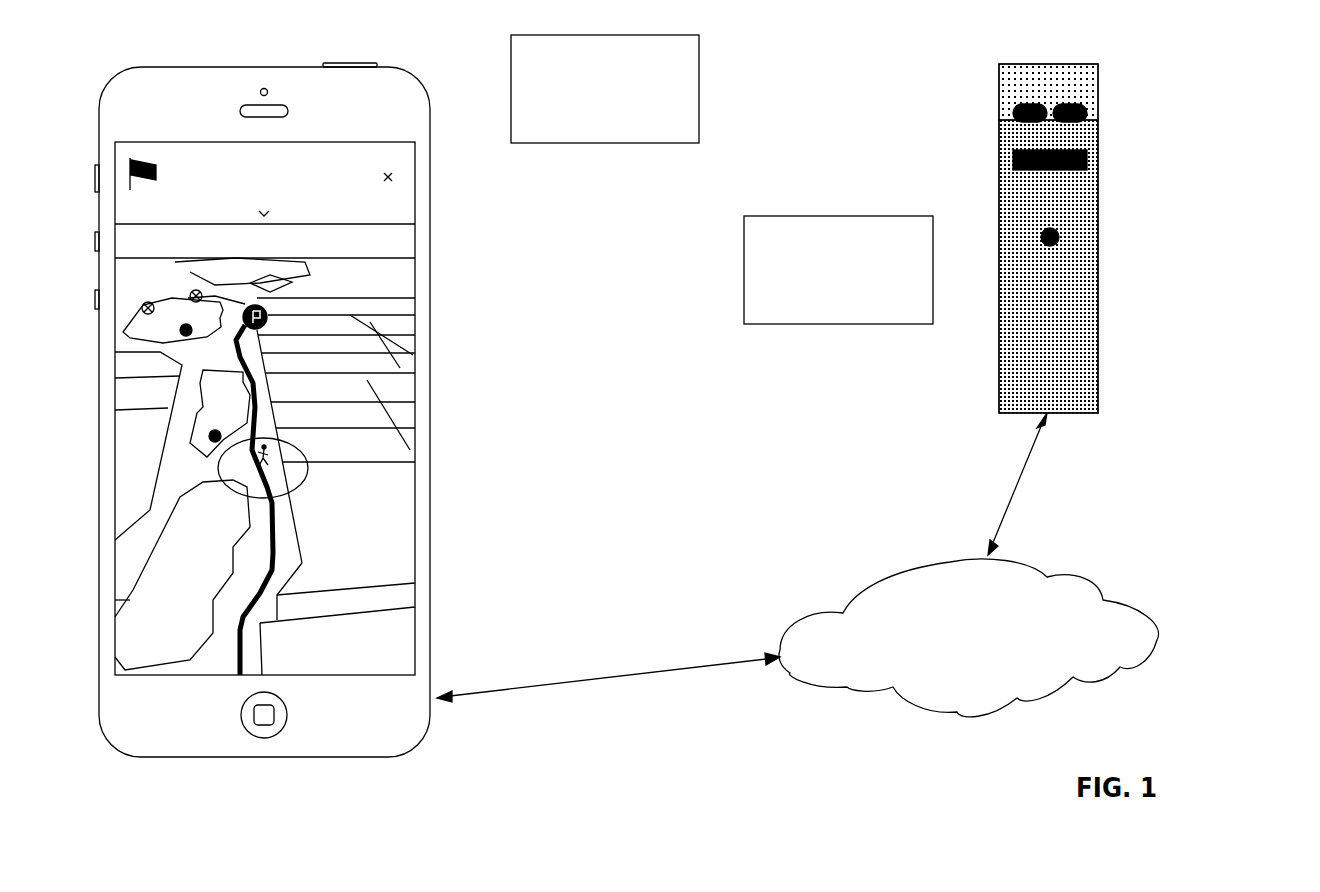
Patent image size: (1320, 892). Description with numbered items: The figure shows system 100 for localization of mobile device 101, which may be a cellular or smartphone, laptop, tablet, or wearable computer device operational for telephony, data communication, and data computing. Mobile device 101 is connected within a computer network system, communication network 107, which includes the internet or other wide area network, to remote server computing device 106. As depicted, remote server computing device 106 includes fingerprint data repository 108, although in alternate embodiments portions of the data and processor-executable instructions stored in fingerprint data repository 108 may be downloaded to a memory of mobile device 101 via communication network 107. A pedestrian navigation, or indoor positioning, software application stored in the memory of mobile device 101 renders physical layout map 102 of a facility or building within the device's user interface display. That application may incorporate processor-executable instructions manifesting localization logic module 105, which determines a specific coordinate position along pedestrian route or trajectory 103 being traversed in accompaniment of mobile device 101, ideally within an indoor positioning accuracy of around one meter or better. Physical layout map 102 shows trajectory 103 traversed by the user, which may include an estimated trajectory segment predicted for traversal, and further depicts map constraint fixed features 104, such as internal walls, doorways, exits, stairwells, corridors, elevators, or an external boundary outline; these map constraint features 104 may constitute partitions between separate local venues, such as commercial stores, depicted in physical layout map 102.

The system 100 is at (1302, 76).
The mobile device 101 is at (373, 116).
The physical layout map 102 is at (191, 622).
The pedestrian route or trajectory 103 is at (275, 570).
The map constraint fixed features 104 is at (383, 412).
The localization logic module 105 is at (428, 172).
The remote server computing device 106 is at (1058, 308).
The communication network 107 is at (1000, 680).
The fingerprint data repository 108 is at (1000, 187).